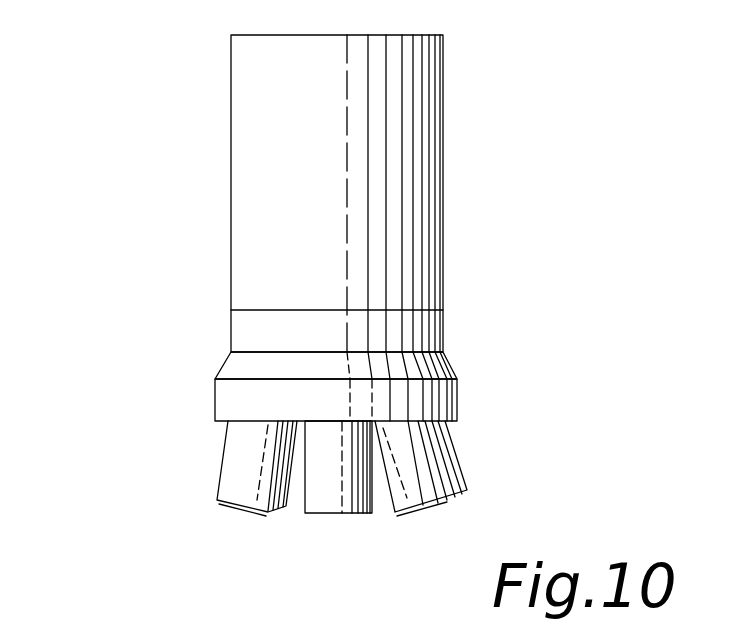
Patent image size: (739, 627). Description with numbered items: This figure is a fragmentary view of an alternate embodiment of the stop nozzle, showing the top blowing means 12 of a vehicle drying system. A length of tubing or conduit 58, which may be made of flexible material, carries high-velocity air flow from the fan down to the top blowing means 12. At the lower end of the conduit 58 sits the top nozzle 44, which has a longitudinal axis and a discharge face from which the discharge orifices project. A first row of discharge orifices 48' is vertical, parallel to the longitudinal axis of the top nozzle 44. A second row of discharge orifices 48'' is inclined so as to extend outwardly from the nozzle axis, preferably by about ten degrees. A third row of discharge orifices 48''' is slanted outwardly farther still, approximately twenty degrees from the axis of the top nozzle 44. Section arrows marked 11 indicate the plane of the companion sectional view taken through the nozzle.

The conduit 58 is at (240, 107).
The top blowing means 12 is at (212, 359).
The top nozzle 44 is at (449, 395).
The first row of discharge orifices 48' is at (337, 491).
The second row of discharge orifices 48'' is at (338, 492).
The third row of discharge orifices 48''' is at (331, 466).
The section line 11 is at (165, 523).